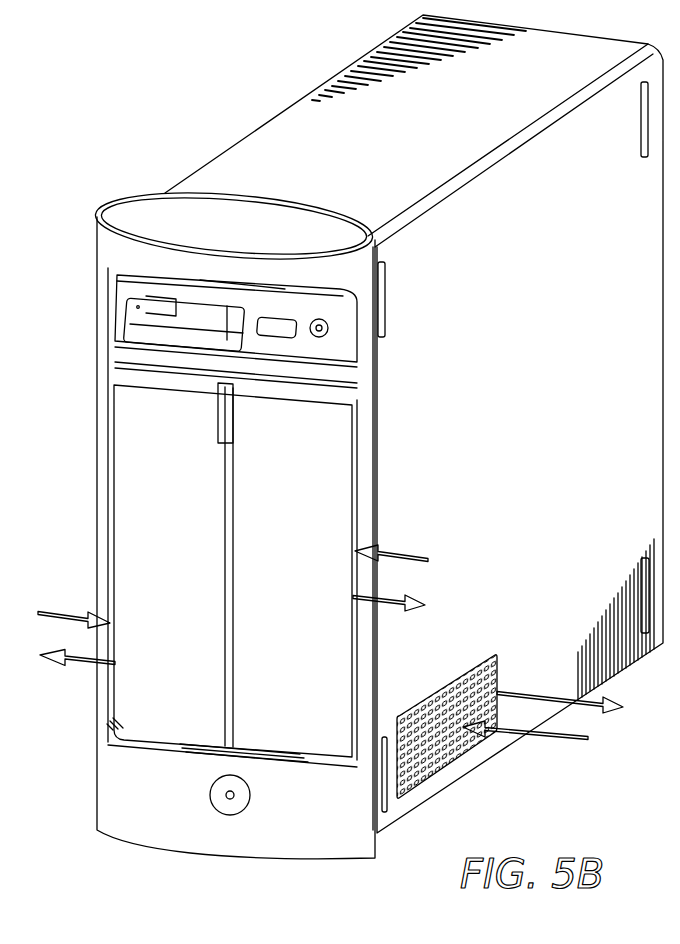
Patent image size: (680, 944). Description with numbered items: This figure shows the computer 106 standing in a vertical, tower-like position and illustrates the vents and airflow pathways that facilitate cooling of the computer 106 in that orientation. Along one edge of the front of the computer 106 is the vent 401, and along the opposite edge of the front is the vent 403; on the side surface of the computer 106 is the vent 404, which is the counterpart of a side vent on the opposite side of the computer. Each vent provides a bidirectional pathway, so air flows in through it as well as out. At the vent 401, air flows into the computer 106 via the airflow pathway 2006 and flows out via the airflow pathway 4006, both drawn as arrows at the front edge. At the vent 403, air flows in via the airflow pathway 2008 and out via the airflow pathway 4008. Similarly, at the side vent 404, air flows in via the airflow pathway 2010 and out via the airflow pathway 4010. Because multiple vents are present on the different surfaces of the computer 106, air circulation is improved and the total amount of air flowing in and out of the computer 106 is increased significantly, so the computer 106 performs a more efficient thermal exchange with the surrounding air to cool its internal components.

The computer 106 is at (225, 148).
The vent 401 is at (103, 565).
The vent 403 is at (360, 477).
The vent 404 is at (433, 770).
The airflow pathway 2006 is at (72, 613).
The airflow pathway 4006 is at (88, 663).
The airflow pathway 2008 is at (400, 550).
The airflow pathway 4008 is at (390, 605).
The airflow pathway 2010 is at (540, 733).
The airflow pathway 4010 is at (588, 708).